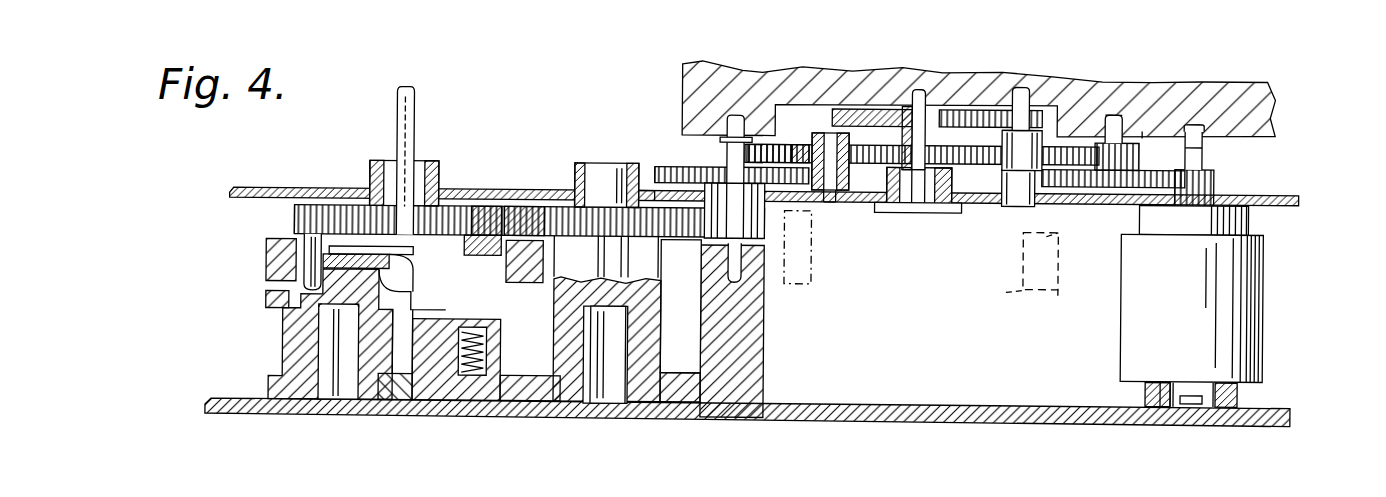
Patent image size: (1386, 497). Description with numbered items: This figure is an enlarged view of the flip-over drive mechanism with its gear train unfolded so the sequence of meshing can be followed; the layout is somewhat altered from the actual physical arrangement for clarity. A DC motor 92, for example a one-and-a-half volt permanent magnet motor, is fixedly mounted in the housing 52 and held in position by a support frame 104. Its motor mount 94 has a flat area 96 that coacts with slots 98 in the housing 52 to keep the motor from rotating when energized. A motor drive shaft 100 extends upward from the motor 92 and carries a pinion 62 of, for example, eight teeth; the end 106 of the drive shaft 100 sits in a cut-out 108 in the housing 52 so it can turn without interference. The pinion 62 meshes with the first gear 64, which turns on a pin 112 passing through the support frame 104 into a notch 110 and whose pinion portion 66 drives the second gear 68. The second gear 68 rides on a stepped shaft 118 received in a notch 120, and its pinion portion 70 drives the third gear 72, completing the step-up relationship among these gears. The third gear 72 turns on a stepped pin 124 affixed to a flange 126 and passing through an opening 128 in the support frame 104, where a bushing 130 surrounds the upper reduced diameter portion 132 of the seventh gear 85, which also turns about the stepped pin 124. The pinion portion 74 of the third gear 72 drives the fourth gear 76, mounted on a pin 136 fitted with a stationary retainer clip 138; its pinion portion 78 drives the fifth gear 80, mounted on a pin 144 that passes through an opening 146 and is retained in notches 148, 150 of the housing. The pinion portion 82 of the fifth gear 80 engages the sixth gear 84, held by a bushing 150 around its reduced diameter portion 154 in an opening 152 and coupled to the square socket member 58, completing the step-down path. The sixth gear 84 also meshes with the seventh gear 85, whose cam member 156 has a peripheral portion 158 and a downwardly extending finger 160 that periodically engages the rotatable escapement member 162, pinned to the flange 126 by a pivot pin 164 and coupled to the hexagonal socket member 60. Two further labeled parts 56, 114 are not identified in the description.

The housing 52 is at (687, 55).
The base plate 56 is at (727, 415).
The socket member 58 is at (623, 372).
The socket member 60 is at (360, 415).
The pinion 62 is at (1215, 179).
The first gear 64 is at (1070, 198).
The pinion portion 66 is at (1137, 160).
The second gear 68 is at (1006, 290).
The pinion portion 70 is at (1097, 123).
The third gear 72 is at (970, 137).
The pinion portion 74 is at (900, 128).
The fourth gear 76 is at (855, 122).
The pinion portion 78 is at (858, 203).
The fifth gear 80 is at (653, 163).
The pinion portion 82 is at (770, 228).
The sixth gear 84 is at (517, 206).
The seventh gear 85 is at (1045, 230).
The DC motor 92 is at (1262, 314).
The motor mount 94 is at (1203, 396).
The flat area 96 is at (1217, 389).
The slots 98 is at (1237, 389).
The motor drive shaft 100 is at (1203, 150).
The support frame 104 is at (466, 186).
The end of drive shaft 106 is at (1210, 106).
The cut-out 108 is at (1195, 112).
The notch 110 is at (1110, 110).
The pin 112 is at (1145, 128).
The switch 114 is at (1033, 260).
The stepped shaft 118 is at (1048, 105).
The notch 120 is at (998, 91).
The stepped pin 124 is at (413, 103).
The flange 126 is at (900, 114).
The opening 128 is at (900, 207).
The bushing 130 is at (440, 173).
The upper reduced diameter portion 132 is at (387, 160).
The pin 136 is at (807, 203).
The stationary retainer clip 138 is at (807, 128).
The pin 144 is at (716, 118).
The opening 146 is at (767, 212).
The notch 148 is at (697, 262).
The bushing 150 is at (573, 160).
The opening 152 is at (640, 164).
The reduced diameter portion 154 is at (596, 160).
The cam member 156 is at (269, 228).
The peripheral portion 158 is at (525, 283).
The finger 160 is at (283, 308).
The escapement member 162 is at (400, 283).
The pivot pin 164 is at (347, 255).